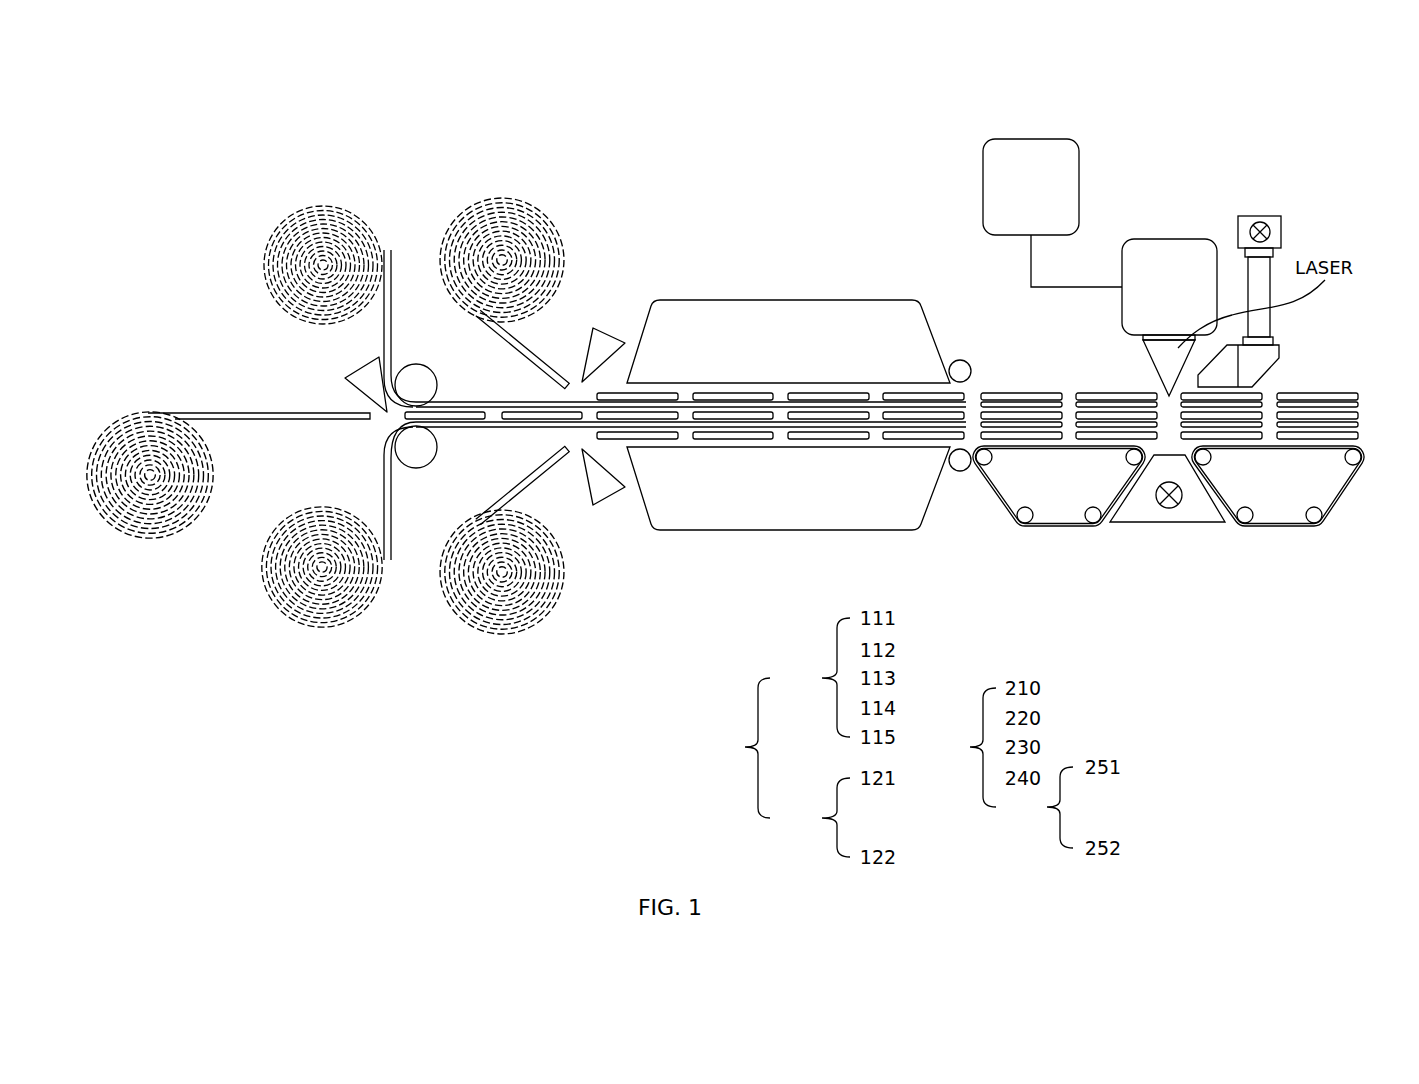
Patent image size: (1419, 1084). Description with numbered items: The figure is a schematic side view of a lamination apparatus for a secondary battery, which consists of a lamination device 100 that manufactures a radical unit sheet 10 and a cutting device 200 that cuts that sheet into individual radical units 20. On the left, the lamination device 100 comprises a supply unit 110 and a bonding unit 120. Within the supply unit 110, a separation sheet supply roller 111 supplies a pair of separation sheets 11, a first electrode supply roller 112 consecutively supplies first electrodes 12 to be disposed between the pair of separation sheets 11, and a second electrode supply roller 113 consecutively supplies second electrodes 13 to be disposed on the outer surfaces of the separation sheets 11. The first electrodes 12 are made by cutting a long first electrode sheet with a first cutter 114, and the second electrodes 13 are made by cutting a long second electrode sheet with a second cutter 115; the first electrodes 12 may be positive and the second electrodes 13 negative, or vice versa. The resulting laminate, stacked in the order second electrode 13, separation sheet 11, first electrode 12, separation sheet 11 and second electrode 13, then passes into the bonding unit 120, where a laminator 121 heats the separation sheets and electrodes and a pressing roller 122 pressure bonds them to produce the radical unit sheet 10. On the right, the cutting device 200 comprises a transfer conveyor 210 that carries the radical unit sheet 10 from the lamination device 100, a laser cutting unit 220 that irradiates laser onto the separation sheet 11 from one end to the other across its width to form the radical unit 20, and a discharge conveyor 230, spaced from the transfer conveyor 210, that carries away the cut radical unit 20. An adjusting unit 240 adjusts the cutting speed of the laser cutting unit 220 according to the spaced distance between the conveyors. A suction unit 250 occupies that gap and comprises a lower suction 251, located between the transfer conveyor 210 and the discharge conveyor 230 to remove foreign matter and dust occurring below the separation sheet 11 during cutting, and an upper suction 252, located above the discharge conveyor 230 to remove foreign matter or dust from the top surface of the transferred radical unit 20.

The radical unit sheet 10 is at (1013, 385).
The separation sheet 11 is at (388, 488).
The first electrodes 12 is at (457, 412).
The second electrodes 13 is at (666, 394).
The radical unit 20 is at (1353, 385).
The lamination device 100 is at (735, 748).
The supply unit 110 is at (815, 677).
The separation sheet supply roller 111 is at (323, 262).
The first electrode supply roller 112 is at (150, 477).
The second electrode supply roller 113 is at (502, 258).
The first cutter 114 is at (345, 378).
The second cutter 115 is at (596, 327).
The bonding unit 120 is at (815, 817).
The laminator 121 is at (788, 512).
The pressing roller 122 is at (960, 471).
The cutting device 200 is at (960, 747).
The transfer conveyor 210 is at (1063, 524).
The laser cutting unit 220 is at (1170, 239).
The discharge conveyor 230 is at (1284, 524).
The adjusting unit 240 is at (1031, 139).
The suction unit 250 is at (1039, 807).
The lower suction 251 is at (1169, 510).
The upper suction 252 is at (1259, 216).